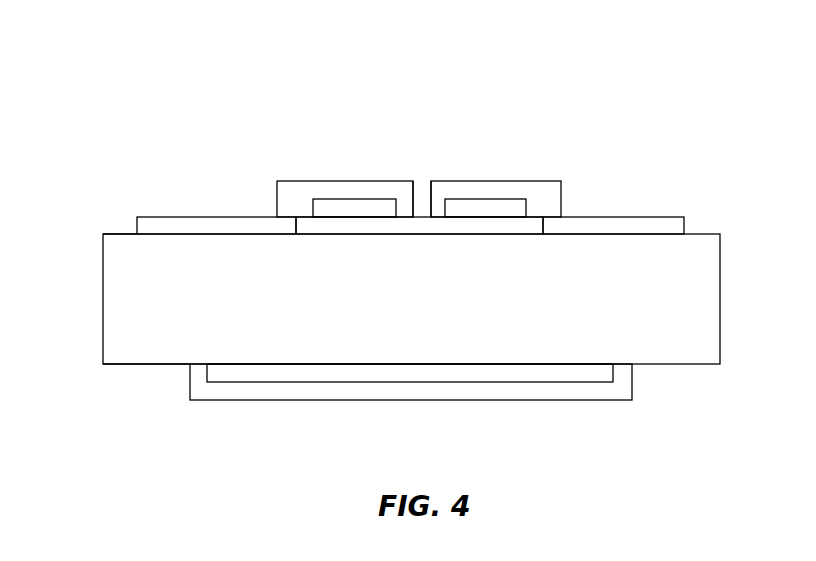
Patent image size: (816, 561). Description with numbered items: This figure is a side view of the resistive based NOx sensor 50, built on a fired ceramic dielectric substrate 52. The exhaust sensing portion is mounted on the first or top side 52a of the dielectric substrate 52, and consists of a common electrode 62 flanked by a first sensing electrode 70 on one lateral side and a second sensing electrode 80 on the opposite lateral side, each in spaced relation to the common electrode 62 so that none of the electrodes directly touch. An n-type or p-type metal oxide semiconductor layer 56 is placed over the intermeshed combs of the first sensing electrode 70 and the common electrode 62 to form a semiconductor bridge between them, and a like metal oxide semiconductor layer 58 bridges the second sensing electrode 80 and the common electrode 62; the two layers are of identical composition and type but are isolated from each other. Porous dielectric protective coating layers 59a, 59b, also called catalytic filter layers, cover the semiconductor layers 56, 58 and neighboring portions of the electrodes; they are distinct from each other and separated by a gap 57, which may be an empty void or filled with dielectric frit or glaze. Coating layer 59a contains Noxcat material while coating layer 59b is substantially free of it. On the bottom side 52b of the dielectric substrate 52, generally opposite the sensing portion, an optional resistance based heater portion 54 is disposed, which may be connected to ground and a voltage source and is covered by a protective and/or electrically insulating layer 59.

The NOx sensor 50 is at (652, 85).
The dielectric substrate 52 is at (720, 275).
The top side of dielectric substrate 52a is at (120, 233).
The bottom side of dielectric substrate 52b is at (137, 366).
The heater portion 54 is at (560, 374).
The metal oxide semiconductor layer 56 is at (355, 209).
The gap 57 is at (422, 192).
The metal oxide semiconductor layer 58 is at (477, 208).
The protective and/or electrically insulating layer 59 is at (227, 390).
The porous dielectric protective coating layer 59a is at (295, 195).
The porous dielectric protective coating layer 59b is at (540, 198).
The common electrode 62 is at (402, 226).
The first sensing electrode 70 is at (198, 225).
The second sensing electrode 80 is at (612, 228).